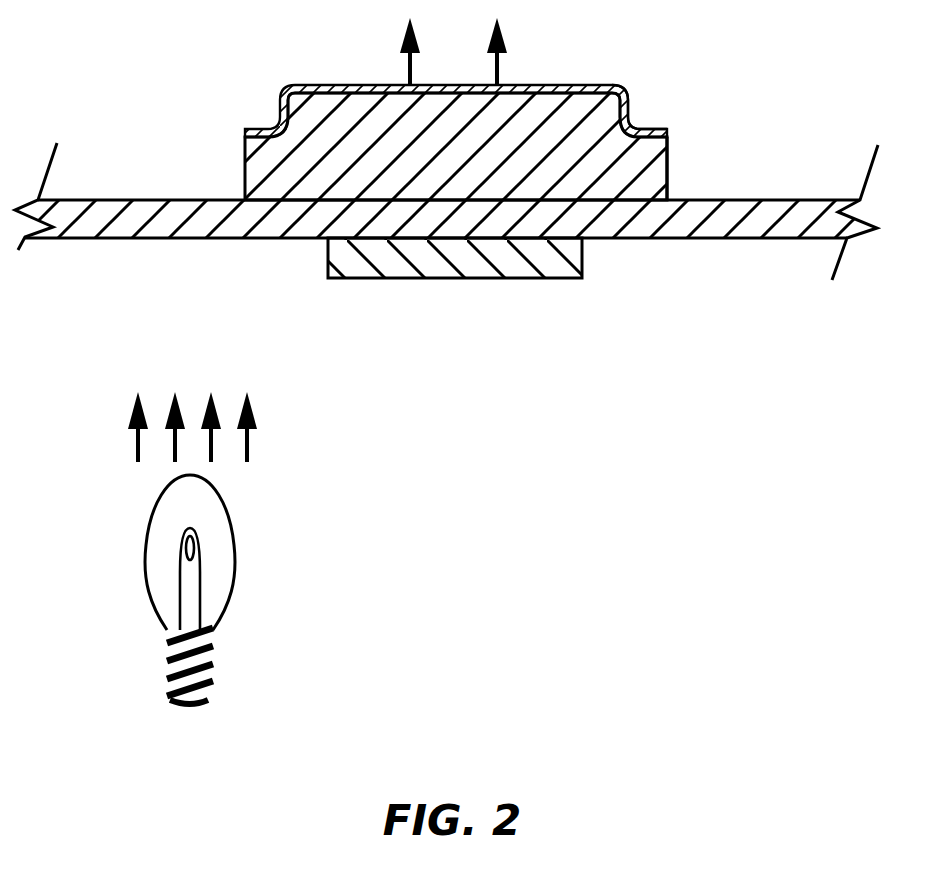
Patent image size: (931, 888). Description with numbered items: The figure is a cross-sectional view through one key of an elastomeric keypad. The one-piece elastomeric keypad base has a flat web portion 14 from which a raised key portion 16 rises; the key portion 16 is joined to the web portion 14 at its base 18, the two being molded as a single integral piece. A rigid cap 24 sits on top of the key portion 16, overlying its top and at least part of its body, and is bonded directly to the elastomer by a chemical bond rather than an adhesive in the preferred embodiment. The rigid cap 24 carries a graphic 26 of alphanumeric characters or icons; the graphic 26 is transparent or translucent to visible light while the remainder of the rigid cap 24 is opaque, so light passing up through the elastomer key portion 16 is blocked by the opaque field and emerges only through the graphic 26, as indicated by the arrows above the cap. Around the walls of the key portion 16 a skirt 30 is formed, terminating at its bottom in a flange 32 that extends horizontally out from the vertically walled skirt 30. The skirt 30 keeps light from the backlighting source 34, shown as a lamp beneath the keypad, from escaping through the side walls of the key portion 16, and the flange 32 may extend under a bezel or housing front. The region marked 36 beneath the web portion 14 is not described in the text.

The web portion 14 is at (795, 215).
The key portion 16 is at (302, 165).
The base 18 is at (670, 195).
The rigid cap 24 is at (627, 85).
The graphic 26 is at (403, 85).
The skirt 30 is at (632, 112).
The flange 32 is at (653, 128).
The backlighting source 34 is at (245, 553).
The light window 36 is at (328, 272).